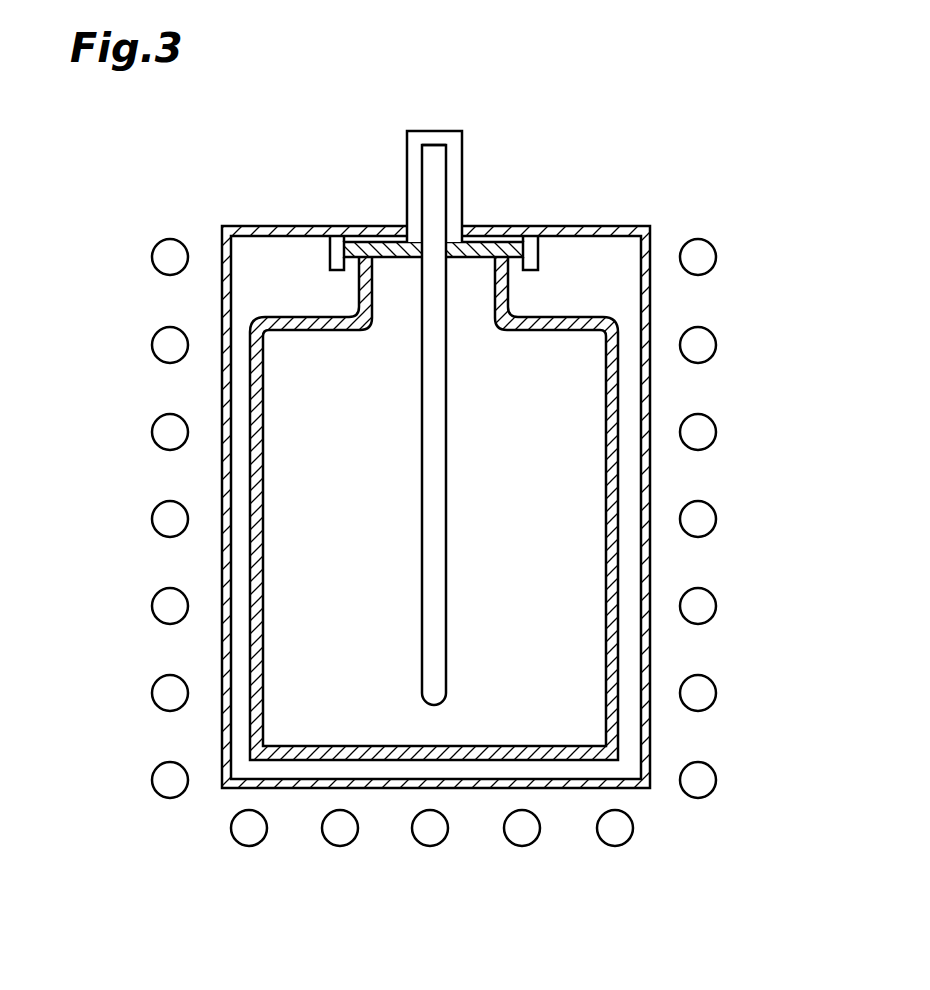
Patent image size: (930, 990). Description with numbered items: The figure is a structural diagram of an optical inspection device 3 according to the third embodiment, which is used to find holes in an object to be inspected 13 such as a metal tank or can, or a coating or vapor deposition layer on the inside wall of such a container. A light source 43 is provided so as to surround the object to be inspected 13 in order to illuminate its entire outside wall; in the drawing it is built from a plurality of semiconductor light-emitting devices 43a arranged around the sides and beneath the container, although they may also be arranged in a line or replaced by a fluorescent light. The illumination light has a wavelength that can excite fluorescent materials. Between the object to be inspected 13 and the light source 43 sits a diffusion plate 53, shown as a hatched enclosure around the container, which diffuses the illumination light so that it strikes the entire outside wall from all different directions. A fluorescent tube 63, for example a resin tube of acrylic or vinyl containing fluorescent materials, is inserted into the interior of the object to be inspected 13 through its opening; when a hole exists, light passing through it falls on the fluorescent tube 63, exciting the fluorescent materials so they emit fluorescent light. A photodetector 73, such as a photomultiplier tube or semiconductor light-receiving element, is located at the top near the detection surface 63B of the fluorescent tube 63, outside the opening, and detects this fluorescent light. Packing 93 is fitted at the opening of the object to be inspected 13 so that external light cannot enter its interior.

The optical inspection device 3 is at (616, 141).
The object to be inspected 13 is at (605, 321).
The light source 43 is at (704, 885).
The semiconductor light-emitting devices 43a is at (152, 256).
The diffusion plate 53 is at (651, 393).
The fluorescent tube 63 is at (447, 478).
The detection surface 63B is at (435, 226).
The photodetector 73 is at (463, 158).
The packing 93 is at (497, 250).